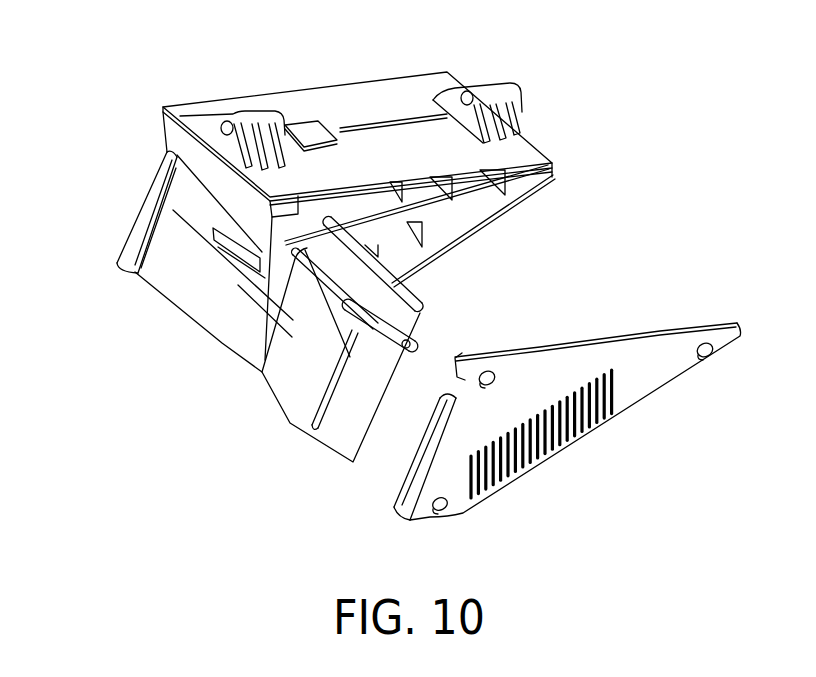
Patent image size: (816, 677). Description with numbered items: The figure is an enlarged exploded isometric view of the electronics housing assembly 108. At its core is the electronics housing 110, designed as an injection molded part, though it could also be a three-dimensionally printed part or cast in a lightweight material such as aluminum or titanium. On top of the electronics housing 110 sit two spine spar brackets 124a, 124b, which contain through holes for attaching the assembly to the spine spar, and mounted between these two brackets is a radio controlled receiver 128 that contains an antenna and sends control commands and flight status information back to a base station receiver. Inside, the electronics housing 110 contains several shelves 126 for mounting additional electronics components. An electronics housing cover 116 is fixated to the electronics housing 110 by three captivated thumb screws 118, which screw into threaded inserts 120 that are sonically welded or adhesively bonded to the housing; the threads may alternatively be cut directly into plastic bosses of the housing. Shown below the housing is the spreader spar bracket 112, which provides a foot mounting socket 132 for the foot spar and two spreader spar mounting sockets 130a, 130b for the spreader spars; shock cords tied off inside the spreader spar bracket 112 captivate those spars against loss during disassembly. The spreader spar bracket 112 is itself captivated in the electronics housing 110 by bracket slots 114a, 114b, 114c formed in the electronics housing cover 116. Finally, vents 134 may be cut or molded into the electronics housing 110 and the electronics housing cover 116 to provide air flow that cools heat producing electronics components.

The electronics housing assembly 108 is at (223, 102).
The electronics housing 110 is at (197, 115).
The spreader spar bracket 112 is at (287, 367).
The bracket slot 114a is at (133, 273).
The bracket slot 114b is at (248, 268).
The bracket slot 114c is at (423, 468).
The electronics housing cover 116 is at (541, 388).
The captivated thumb screws 118 is at (697, 348).
The threaded inserts 120 is at (512, 198).
The spine spar bracket 124a is at (247, 122).
The spine spar bracket 124b is at (487, 90).
The shelves 126 is at (413, 210).
The radio controlled receiver 128 is at (296, 112).
The spreader spar mounting socket 130a is at (322, 280).
The spreader spar mounting socket 130b is at (373, 323).
The foot mounting socket 132 is at (307, 427).
The vents 134 is at (530, 467).